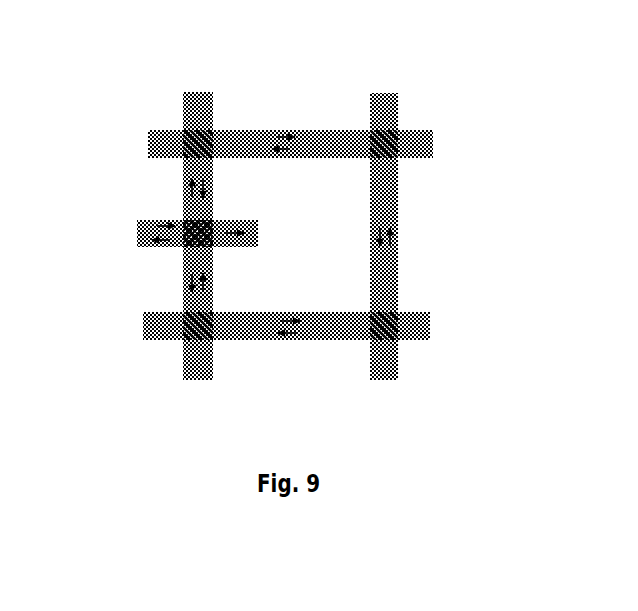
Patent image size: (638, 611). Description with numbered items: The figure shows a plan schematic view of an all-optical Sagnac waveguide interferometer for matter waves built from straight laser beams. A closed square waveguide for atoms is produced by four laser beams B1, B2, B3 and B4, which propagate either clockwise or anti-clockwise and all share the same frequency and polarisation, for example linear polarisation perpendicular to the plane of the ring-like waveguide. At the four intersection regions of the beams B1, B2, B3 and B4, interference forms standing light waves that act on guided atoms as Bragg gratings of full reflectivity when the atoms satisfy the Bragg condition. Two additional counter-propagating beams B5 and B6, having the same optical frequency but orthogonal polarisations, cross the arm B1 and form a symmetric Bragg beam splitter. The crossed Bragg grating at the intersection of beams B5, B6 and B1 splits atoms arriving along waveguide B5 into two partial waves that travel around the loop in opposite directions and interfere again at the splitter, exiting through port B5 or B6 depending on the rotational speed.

The laser beam B1 is at (198, 385).
The laser beam B2 is at (142, 145).
The laser beam B3 is at (381, 88).
The laser beam B4 is at (432, 325).
The laser beam B5 is at (134, 233).
The laser beam B6 is at (261, 233).